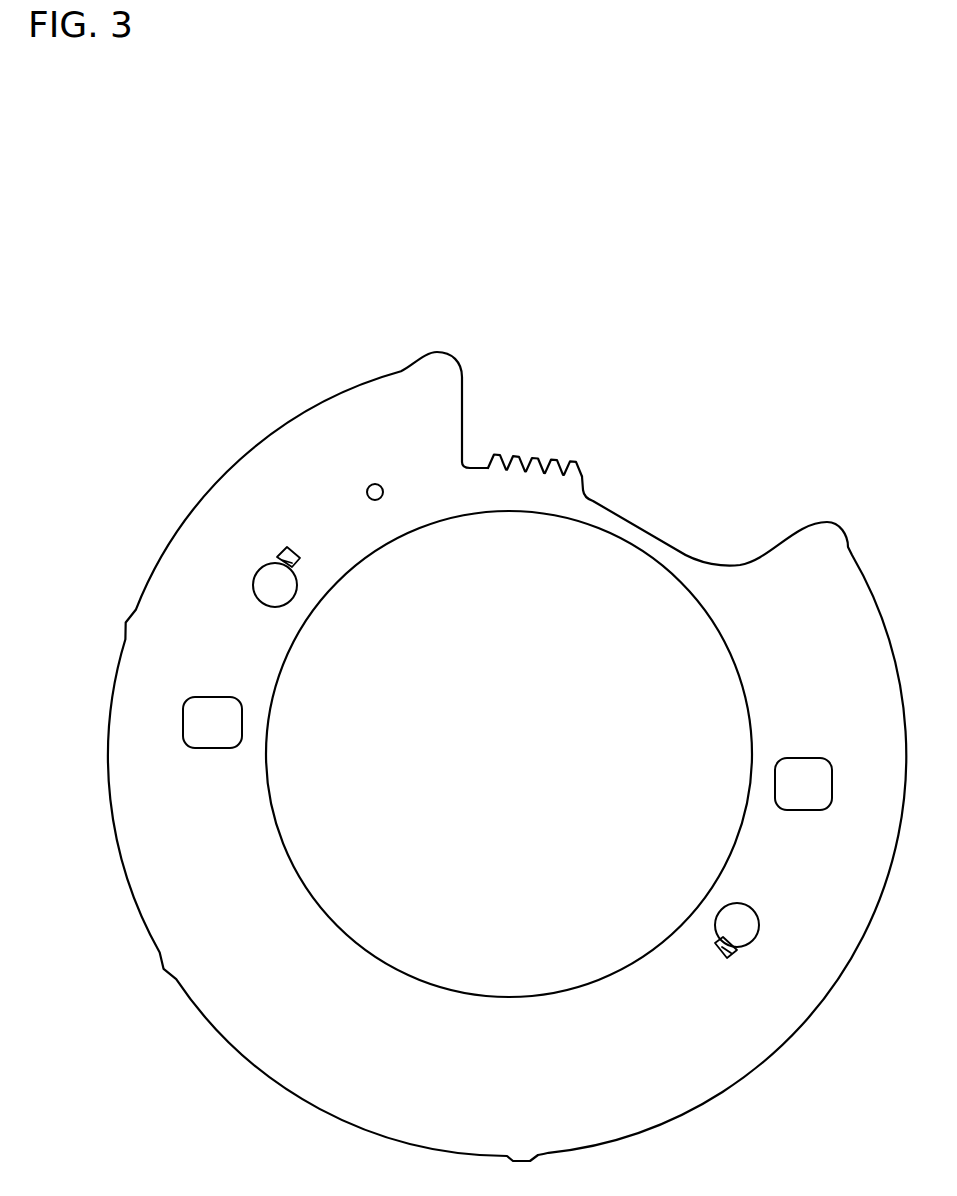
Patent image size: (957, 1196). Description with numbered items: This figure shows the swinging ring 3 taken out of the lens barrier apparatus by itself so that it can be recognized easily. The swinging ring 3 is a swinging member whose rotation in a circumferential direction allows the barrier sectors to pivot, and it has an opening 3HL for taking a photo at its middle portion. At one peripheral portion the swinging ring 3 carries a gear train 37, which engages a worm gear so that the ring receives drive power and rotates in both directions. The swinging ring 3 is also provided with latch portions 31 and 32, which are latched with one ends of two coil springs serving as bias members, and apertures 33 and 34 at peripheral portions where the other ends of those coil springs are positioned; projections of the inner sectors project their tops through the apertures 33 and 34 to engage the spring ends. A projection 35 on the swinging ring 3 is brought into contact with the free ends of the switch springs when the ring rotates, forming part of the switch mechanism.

The swinging ring 3 is at (347, 400).
The opening 3HL is at (565, 518).
The latch portion 31 is at (285, 551).
The latch portion 32 is at (724, 955).
The aperture 33 is at (210, 737).
The aperture 34 is at (811, 767).
The projection 35 is at (370, 485).
The gear train 37 is at (543, 460).